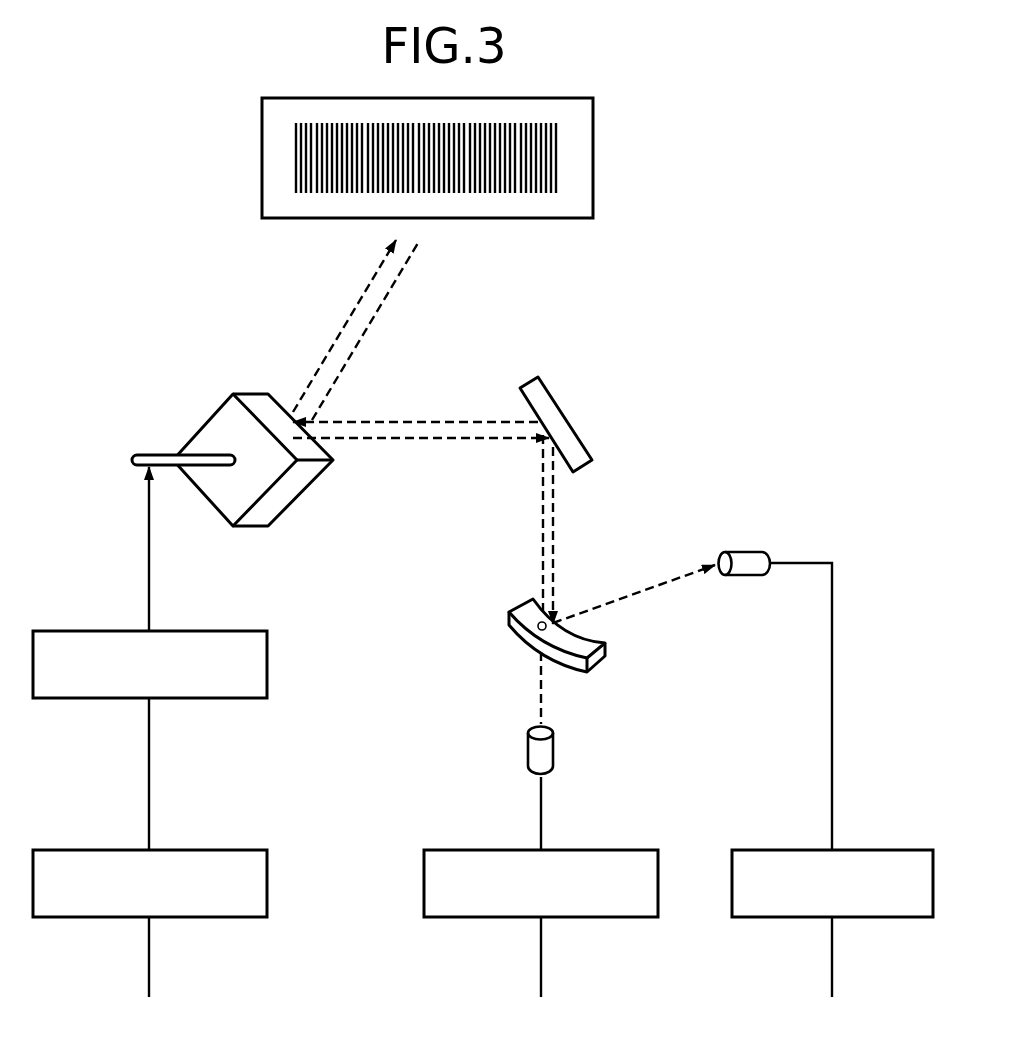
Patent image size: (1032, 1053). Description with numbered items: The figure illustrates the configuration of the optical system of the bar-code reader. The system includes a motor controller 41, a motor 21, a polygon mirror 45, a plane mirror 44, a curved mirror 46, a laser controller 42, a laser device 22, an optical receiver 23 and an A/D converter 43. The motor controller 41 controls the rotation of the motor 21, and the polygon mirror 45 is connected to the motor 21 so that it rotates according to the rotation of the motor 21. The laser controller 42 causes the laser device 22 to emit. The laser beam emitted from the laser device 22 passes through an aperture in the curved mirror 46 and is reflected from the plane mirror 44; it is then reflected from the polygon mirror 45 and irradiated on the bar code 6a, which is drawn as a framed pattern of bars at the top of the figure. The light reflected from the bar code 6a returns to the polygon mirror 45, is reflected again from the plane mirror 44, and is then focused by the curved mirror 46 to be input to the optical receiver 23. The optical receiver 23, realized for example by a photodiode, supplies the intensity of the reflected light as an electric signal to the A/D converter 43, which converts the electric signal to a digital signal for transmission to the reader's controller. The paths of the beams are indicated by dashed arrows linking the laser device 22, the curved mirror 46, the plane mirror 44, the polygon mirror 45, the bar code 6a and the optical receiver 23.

The bar code 6a is at (594, 153).
The motor 21 is at (243, 630).
The laser device 22 is at (556, 757).
The optical receiver 23 is at (743, 550).
The motor controller 41 is at (247, 849).
The laser controller 42 is at (629, 848).
The A/D converter 43 is at (907, 848).
The plane mirror 44 is at (563, 418).
The polygon mirror 45 is at (301, 497).
The curved mirror 46 is at (598, 667).